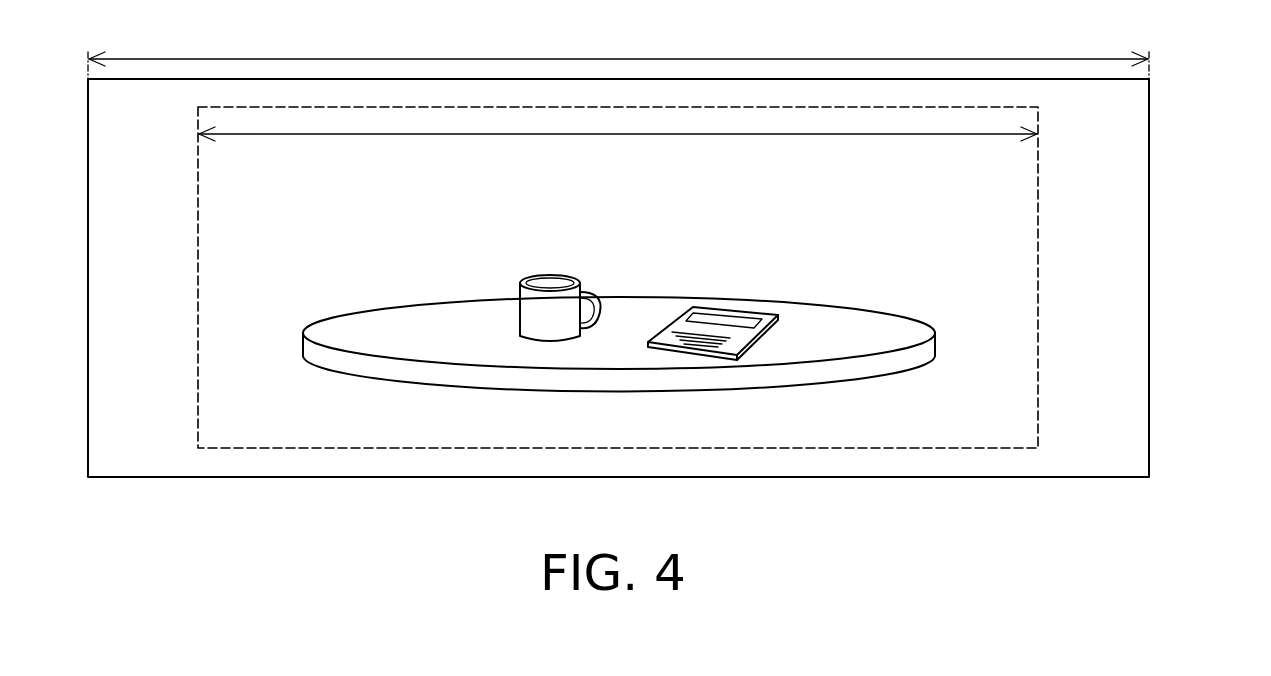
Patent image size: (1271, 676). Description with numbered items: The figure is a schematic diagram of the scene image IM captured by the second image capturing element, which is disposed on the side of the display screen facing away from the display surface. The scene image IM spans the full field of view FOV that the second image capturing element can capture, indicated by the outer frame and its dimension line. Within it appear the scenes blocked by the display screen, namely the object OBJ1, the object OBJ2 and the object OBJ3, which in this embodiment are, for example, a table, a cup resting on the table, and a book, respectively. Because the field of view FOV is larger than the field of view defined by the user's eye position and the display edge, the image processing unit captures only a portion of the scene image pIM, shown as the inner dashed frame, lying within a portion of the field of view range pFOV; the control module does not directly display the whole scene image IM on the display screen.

The scene image IM is at (1150, 178).
The field of view FOV is at (618, 51).
The portion of the scene image pIM is at (1039, 318).
The portion of the field of view range pFOV is at (618, 148).
The object OBJ1 is at (365, 327).
The object OBJ2 is at (572, 293).
The object OBJ3 is at (733, 318).